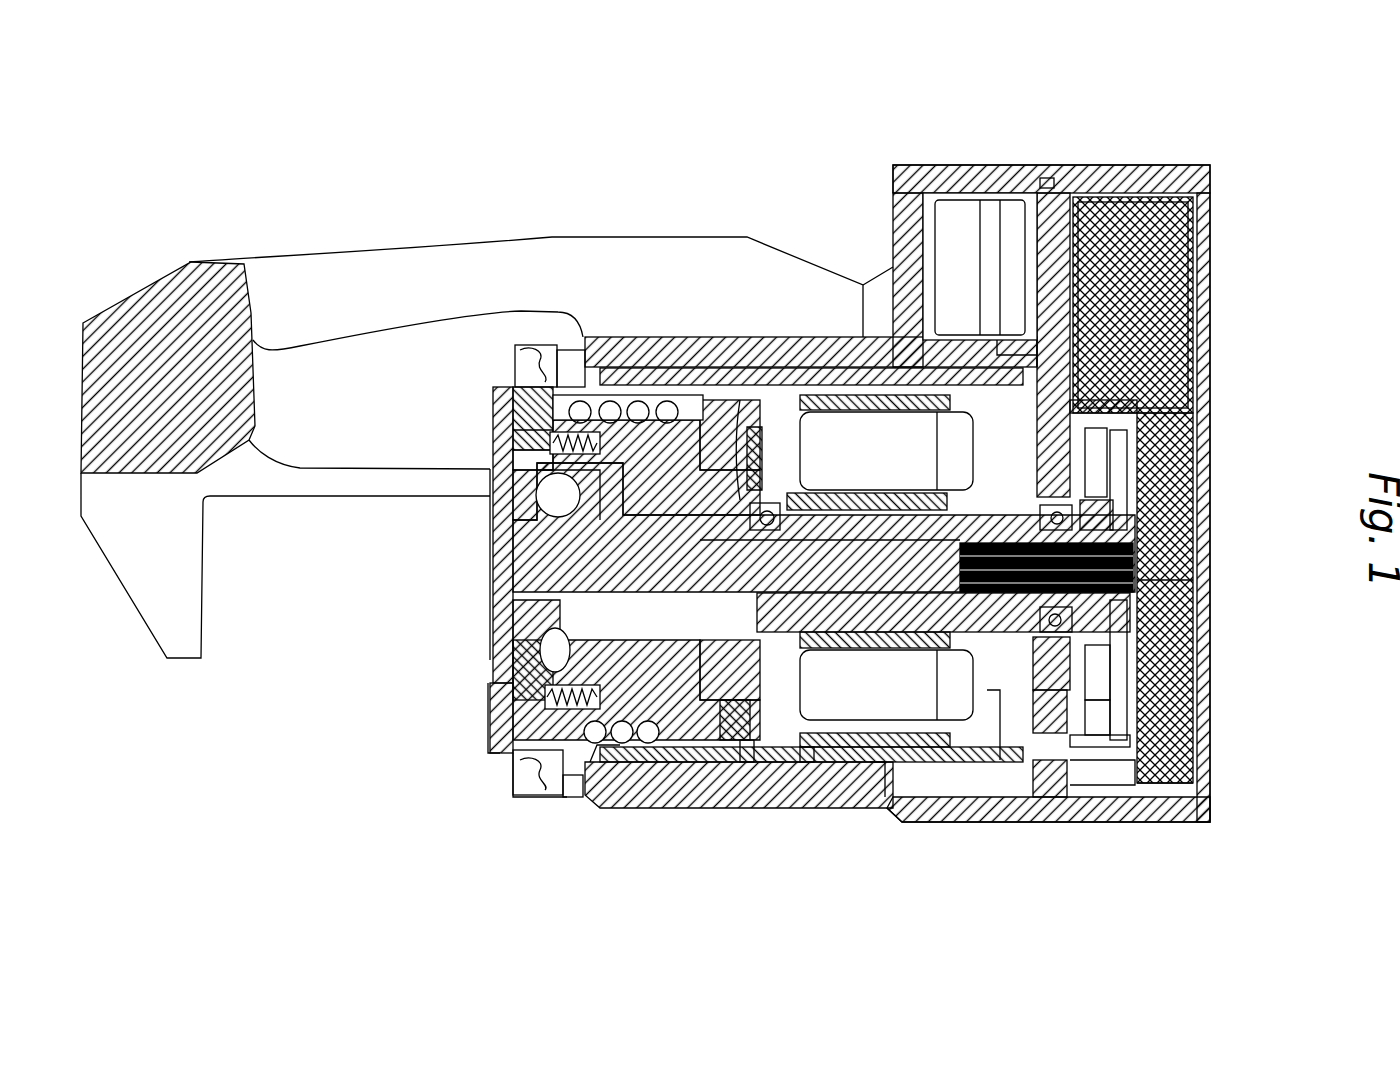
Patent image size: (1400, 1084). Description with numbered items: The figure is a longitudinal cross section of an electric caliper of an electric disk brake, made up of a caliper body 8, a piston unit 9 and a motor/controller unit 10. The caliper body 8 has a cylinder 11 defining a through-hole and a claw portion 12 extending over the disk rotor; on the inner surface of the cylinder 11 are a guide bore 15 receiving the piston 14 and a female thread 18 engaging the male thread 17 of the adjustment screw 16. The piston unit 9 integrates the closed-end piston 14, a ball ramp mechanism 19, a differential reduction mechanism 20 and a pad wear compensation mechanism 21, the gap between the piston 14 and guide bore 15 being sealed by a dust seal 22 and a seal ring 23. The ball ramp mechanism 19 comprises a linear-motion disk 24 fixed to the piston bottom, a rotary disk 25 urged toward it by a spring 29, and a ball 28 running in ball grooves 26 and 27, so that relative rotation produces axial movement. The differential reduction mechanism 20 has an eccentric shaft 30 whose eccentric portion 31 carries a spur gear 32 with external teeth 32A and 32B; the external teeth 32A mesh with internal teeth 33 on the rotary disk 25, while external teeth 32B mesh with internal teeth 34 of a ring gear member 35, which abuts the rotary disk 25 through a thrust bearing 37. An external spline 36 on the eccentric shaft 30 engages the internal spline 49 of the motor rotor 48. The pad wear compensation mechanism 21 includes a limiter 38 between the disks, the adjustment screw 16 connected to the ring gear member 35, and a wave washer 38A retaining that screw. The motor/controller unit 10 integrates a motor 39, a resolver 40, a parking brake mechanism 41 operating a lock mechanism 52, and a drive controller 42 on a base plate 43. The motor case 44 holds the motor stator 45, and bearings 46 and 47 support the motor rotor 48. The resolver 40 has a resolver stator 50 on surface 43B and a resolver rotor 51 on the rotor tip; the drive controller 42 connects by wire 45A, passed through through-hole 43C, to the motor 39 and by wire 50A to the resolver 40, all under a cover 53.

The caliper body 8 is at (780, 337).
The piston unit 9 is at (692, 808).
The motor/controller unit 10 is at (1115, 160).
The cylinder 11 is at (847, 337).
The claw portion 12 is at (144, 575).
The piston 14 is at (488, 687).
The guide bore 15 is at (640, 810).
The adjustment screw 16 is at (777, 760).
The male thread 17 is at (878, 780).
The female thread 18 is at (807, 762).
The ball ramp mechanism 19 is at (488, 662).
The differential reduction mechanism 20 is at (672, 368).
The pad wear compensation mechanism 21 is at (490, 391).
The dust seal 22 is at (513, 793).
The seal ring 23 is at (563, 800).
The linear-motion disk 24 is at (495, 489).
The rotary disk 25 is at (495, 457).
The ball groove 26 is at (492, 648).
The ball groove 27 is at (497, 753).
The ball 28 is at (495, 502).
The spring 29 is at (598, 345).
The eccentric shaft 30 is at (500, 608).
The eccentric portion 31 is at (500, 573).
The spur gear 32 is at (710, 395).
The external teeth 32A is at (595, 762).
The external teeth 32B is at (733, 745).
The internal teeth 33 is at (638, 400).
The internal teeth 34 is at (765, 503).
The ring gear member 35 is at (748, 427).
The external spline 36 is at (1208, 545).
The thrust bearing 37 is at (647, 400).
The limiter 38 is at (563, 345).
The wave washer 38A is at (747, 762).
The motor 39 is at (912, 780).
The resolver 40 is at (1143, 450).
The parking brake mechanism 41 is at (1000, 690).
The drive controller 42 is at (1160, 302).
The base plate 43 is at (1047, 180).
The surface 43B is at (1075, 790).
The through-hole 43C is at (1112, 787).
The motor case 44 is at (1008, 363).
The motor stator 45 is at (905, 430).
The wire 45A is at (1113, 743).
The bearing 46 is at (815, 400).
The bearing 47 is at (1128, 480).
The motor rotor 48 is at (838, 650).
The internal spline 49 is at (1195, 580).
The resolver stator 50 is at (1115, 673).
The wire 50A is at (1115, 717).
The resolver rotor 51 is at (1105, 627).
The lock mechanism 52 is at (1062, 770).
The cover 53 is at (1188, 802).